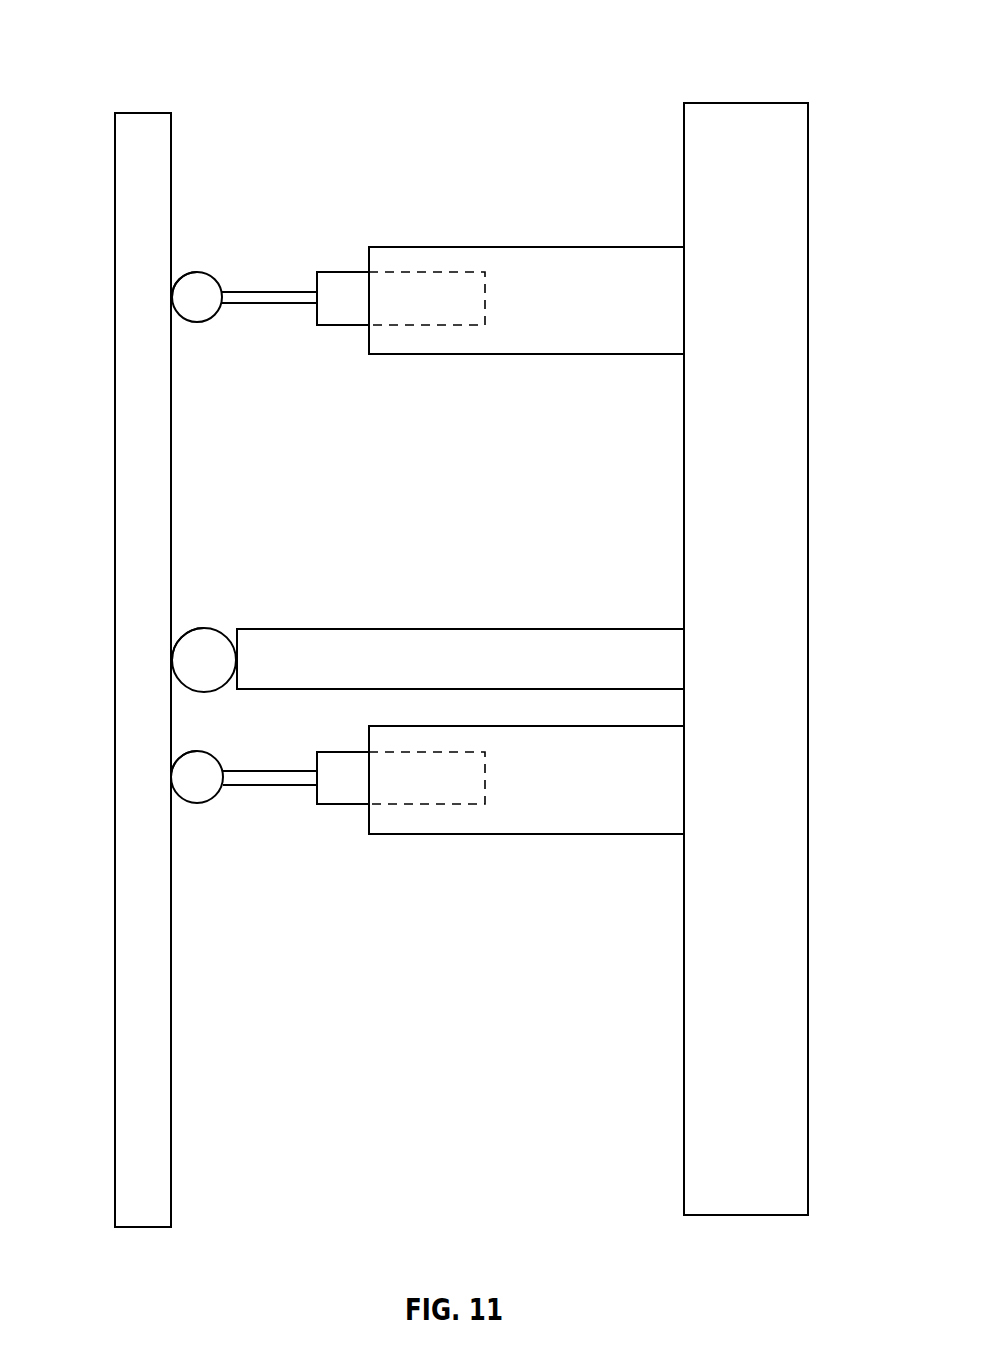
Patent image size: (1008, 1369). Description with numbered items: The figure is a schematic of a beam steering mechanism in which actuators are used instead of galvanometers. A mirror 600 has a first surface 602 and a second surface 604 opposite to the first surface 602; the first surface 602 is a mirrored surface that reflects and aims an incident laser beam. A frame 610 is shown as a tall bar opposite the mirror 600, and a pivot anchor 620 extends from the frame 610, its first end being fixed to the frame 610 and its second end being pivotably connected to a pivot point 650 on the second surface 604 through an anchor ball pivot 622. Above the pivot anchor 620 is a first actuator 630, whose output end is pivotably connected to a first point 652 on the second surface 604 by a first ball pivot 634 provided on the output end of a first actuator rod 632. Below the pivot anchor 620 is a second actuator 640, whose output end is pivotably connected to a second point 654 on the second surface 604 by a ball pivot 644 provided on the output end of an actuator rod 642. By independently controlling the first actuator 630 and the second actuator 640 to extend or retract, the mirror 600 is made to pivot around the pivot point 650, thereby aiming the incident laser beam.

The mirror 600 is at (138, 122).
The first surface 602 is at (115, 437).
The second surface 604 is at (171, 444).
The frame 610 is at (798, 568).
The pivot anchor 620 is at (431, 643).
The anchor ball pivot 622 is at (200, 635).
The first actuator 630 is at (538, 253).
The first actuator rod 632 is at (278, 297).
The first ball pivot 634 is at (194, 280).
The second actuator 640 is at (557, 828).
The actuator rod 642 is at (275, 780).
The ball pivot 644 is at (192, 795).
The pivot point 650 is at (171, 660).
The first point 652 is at (171, 297).
The second point 654 is at (171, 778).